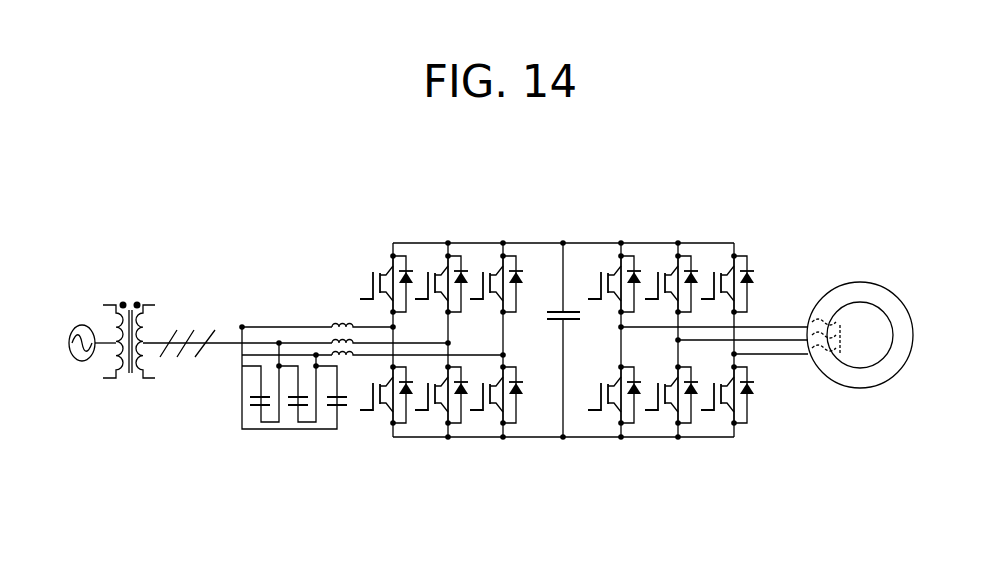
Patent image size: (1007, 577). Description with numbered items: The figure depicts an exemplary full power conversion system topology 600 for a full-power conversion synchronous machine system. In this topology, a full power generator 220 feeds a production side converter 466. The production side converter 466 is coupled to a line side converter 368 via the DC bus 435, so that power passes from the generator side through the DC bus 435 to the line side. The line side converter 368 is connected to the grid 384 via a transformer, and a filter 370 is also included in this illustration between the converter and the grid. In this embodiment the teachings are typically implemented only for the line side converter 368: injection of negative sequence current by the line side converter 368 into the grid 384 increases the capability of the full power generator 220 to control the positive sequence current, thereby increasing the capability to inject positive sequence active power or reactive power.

The grid 384 is at (163, 342).
The filter 370 is at (272, 430).
The line side converter 368 is at (432, 437).
The DC bus 435 is at (582, 243).
The production side converter 466 is at (650, 437).
The full power generator 220 is at (858, 388).
The full power conversion system topology 600 is at (790, 469).